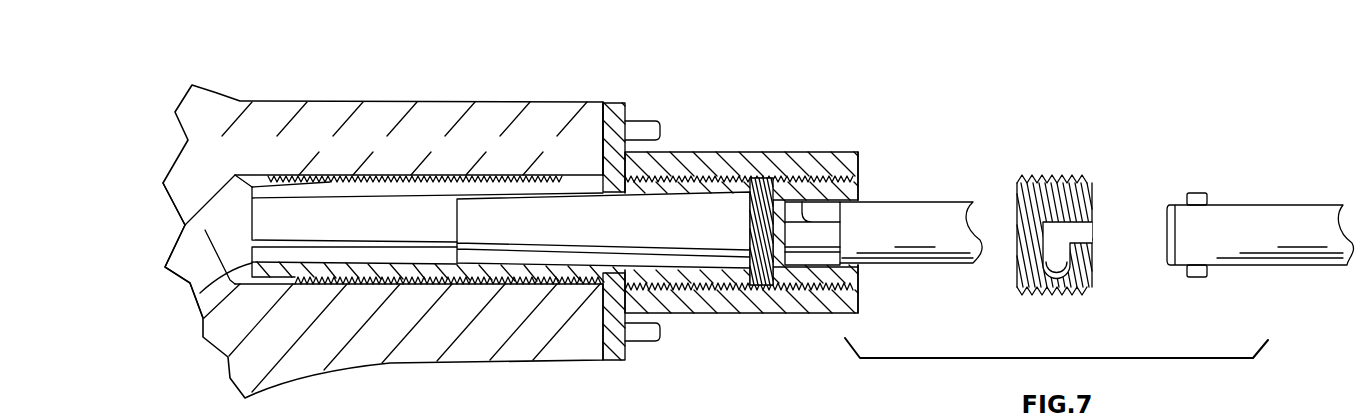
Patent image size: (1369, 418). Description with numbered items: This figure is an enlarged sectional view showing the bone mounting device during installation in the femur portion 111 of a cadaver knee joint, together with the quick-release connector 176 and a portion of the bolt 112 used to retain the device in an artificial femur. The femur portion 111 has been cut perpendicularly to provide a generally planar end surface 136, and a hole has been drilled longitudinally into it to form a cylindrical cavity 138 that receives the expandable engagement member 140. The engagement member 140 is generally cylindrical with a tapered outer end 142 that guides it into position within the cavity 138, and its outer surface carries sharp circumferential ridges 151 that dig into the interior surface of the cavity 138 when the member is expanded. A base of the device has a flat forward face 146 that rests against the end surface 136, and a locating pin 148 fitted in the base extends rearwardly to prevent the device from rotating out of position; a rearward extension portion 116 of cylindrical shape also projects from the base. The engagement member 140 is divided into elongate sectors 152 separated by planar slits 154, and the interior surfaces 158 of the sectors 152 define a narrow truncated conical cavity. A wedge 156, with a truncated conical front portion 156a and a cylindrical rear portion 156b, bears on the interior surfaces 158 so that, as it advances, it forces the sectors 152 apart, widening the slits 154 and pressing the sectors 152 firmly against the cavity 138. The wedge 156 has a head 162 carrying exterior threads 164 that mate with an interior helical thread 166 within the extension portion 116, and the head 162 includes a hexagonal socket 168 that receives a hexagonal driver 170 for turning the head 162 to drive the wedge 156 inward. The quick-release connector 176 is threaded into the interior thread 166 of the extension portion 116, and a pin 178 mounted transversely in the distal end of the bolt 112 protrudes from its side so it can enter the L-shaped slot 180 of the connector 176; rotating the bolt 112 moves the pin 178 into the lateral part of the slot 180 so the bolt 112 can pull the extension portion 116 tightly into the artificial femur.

The femur portion 111 is at (390, 100).
The bolt 112 is at (1284, 205).
The extension portion 116 is at (858, 281).
The end surface 136 is at (612, 108).
The cylindrical cavity 138 is at (218, 228).
The expandable engagement member 140 is at (452, 175).
The tapered outer end 142 is at (242, 174).
The flat forward face 146 is at (603, 148).
The locating pin 148 is at (655, 121).
The sharp circumferential ridges 151 is at (370, 175).
The sectors 152 is at (234, 180).
The planar slits 154 is at (278, 240).
The wedge 156 is at (457, 222).
The front portion 156a is at (526, 243).
The rear portion 156b is at (693, 197).
The interior surfaces 158 is at (300, 192).
The head 162 is at (738, 300).
The exterior threads 164 is at (750, 230).
The interior helical thread 166 is at (858, 186).
The hexagonal socket 168 is at (840, 222).
The hexagonal driver 170 is at (954, 265).
The quick-release connector 176 is at (1052, 175).
The pin 178 is at (1197, 193).
The L-shaped slot 180 is at (1075, 232).